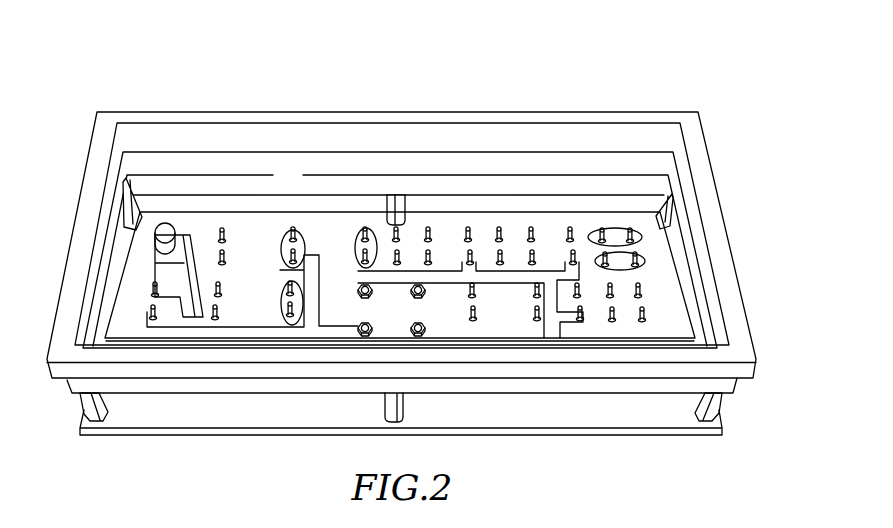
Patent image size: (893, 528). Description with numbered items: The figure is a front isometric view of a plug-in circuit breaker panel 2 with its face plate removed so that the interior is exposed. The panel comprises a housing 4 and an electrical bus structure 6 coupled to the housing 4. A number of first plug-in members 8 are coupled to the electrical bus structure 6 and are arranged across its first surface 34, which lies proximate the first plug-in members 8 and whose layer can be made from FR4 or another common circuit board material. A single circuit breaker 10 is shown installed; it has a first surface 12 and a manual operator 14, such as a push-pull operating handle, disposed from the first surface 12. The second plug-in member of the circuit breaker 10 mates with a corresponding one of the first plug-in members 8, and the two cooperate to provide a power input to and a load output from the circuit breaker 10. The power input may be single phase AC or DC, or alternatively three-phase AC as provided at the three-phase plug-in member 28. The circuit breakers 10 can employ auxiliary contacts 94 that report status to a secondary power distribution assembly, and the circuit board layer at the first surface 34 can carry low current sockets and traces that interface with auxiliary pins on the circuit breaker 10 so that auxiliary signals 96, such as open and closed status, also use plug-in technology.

The plug-in circuit breaker panel 2 is at (211, 98).
The housing 4 is at (603, 110).
The electrical bus structure 6 is at (248, 218).
The first plug-in members 8 is at (360, 265).
The circuit breaker 10 is at (161, 255).
The first surface 12 is at (181, 241).
The manual operator 14 is at (158, 236).
The three-phase plug-in member 28 is at (644, 260).
The first surface 34 is at (262, 313).
The auxiliary contacts 94 is at (201, 285).
The auxiliary signals 96 is at (228, 300).